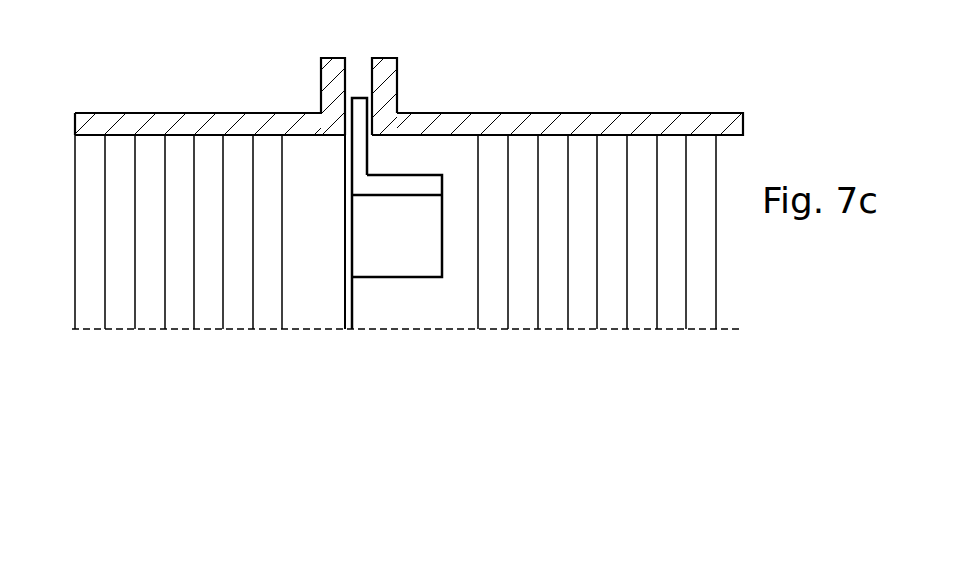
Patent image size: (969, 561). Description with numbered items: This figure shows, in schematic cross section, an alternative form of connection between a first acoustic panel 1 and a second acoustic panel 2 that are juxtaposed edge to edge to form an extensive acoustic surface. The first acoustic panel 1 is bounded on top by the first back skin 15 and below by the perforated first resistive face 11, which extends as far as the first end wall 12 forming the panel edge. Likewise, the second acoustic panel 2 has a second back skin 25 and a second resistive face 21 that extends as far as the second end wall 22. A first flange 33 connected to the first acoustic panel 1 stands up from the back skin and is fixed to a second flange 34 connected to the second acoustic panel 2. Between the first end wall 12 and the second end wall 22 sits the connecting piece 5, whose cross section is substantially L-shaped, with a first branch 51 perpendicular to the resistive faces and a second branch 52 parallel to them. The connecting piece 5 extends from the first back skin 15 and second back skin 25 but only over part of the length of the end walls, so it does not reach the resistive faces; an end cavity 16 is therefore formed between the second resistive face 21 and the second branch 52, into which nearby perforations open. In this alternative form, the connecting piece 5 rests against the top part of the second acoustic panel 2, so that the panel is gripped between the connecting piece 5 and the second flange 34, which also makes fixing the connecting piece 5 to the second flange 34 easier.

The first acoustic panel 1 is at (87, 320).
The second acoustic panel 2 is at (700, 275).
The connecting piece 5 is at (394, 169).
The first resistive face 11 is at (277, 327).
The first end wall 12 is at (343, 190).
The first back skin 15 is at (210, 135).
The end cavity 16 is at (383, 322).
The second resistive face 21 is at (530, 330).
The second end wall 22 is at (355, 302).
The second back skin 25 is at (613, 135).
The first flange 33 is at (322, 88).
The second flange 34 is at (387, 90).
The first branch 51 is at (362, 158).
The second branch 52 is at (385, 190).